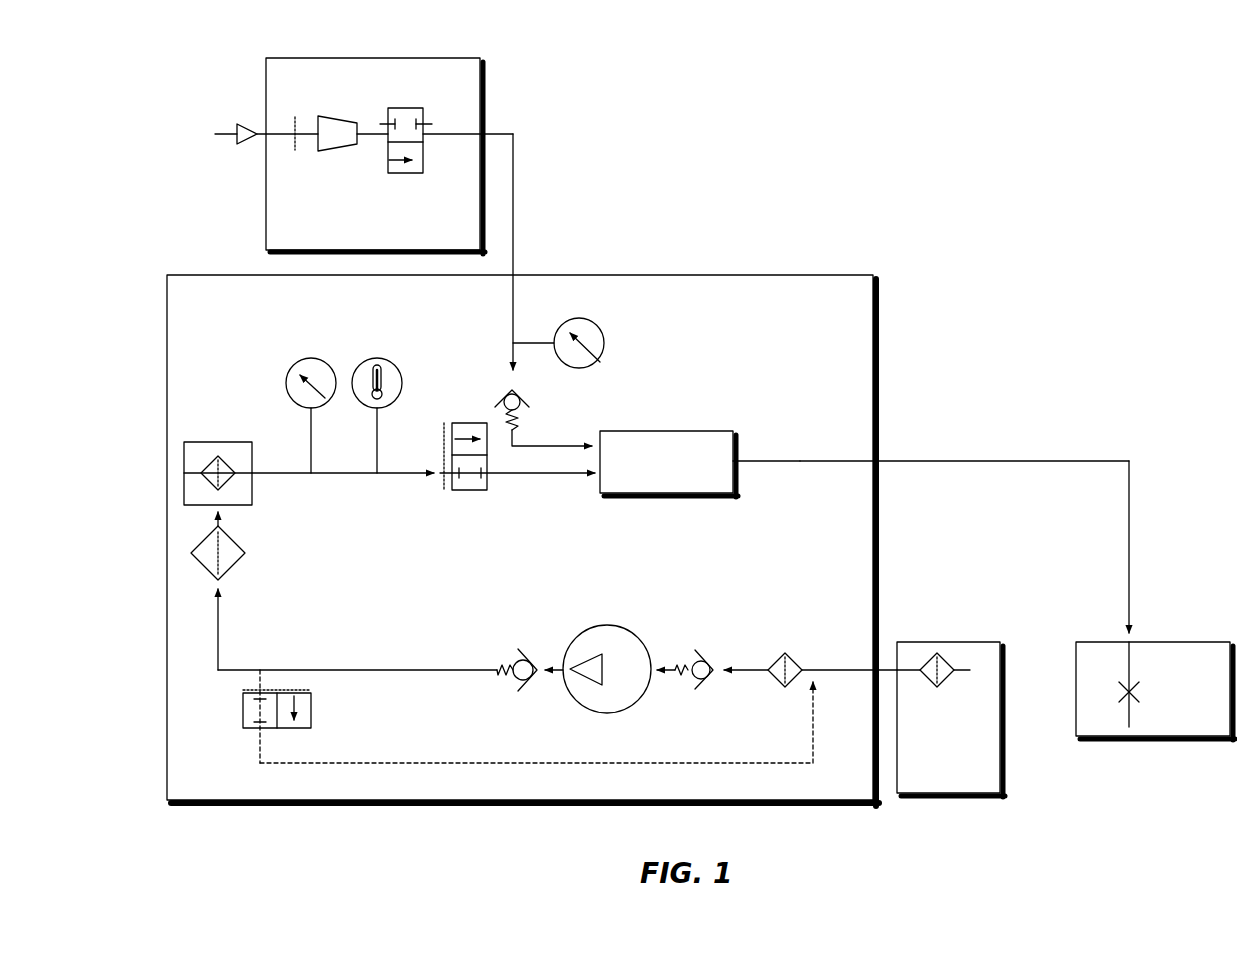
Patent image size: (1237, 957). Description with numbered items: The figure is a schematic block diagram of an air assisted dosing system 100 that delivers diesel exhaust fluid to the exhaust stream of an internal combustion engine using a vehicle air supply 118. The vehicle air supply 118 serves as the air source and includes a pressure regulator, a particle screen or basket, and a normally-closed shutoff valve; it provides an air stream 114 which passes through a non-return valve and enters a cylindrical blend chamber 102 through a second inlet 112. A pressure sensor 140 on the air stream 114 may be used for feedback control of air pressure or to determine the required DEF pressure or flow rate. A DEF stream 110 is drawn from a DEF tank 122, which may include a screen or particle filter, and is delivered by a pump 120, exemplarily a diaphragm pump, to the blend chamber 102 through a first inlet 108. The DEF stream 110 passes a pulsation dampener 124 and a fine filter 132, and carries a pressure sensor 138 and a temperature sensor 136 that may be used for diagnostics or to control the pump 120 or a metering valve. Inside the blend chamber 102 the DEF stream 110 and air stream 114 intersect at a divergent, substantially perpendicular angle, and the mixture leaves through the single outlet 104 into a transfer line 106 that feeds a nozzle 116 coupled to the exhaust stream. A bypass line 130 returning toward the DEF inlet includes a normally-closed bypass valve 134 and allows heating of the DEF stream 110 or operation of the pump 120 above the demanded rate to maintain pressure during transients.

The system 100 is at (916, 108).
The cylindrical blend chamber 102 is at (669, 464).
The outlet 104 is at (738, 460).
The transfer line 106 is at (997, 461).
The first inlet 108 is at (578, 475).
The DEF stream 110 is at (845, 671).
The second inlet 112 is at (597, 444).
The air stream 114 is at (514, 160).
The nozzle 116 is at (1180, 640).
The vehicle air supply 118 is at (266, 83).
The pump 120 is at (608, 625).
The DEF tank 122 is at (947, 641).
The pulsation dampener 124 is at (228, 442).
The bypass line 130 is at (538, 763).
The fine filter 132 is at (467, 490).
The purge valve 134 is at (311, 710).
The temperature sensor 136 is at (380, 358).
The pressure sensor 138 is at (305, 358).
The pressure sensor 140 is at (604, 343).